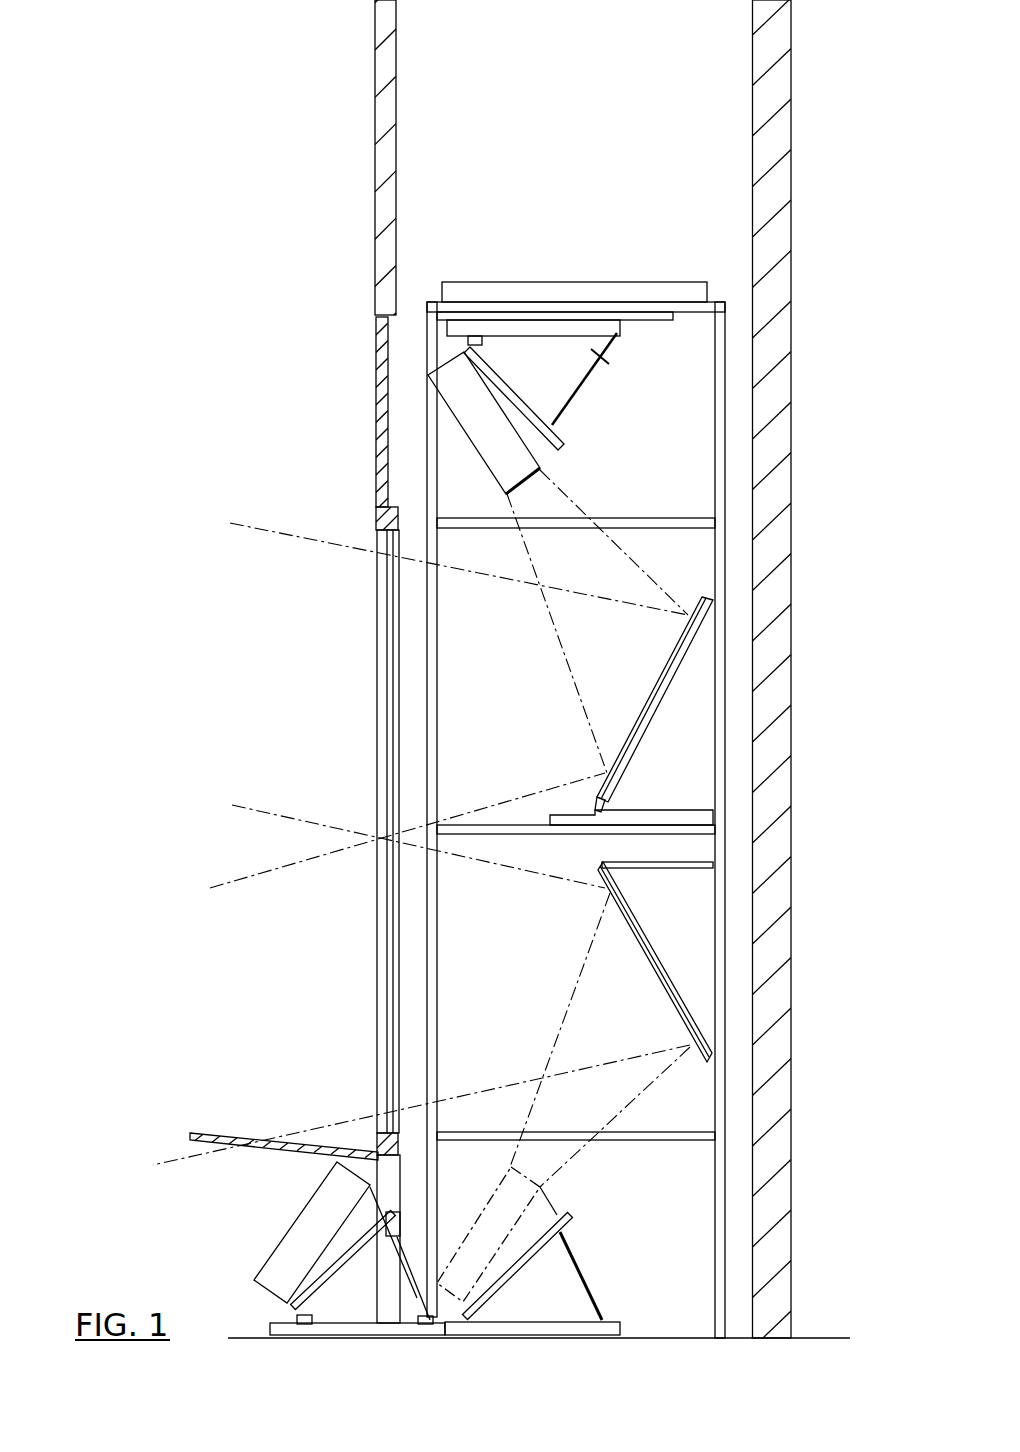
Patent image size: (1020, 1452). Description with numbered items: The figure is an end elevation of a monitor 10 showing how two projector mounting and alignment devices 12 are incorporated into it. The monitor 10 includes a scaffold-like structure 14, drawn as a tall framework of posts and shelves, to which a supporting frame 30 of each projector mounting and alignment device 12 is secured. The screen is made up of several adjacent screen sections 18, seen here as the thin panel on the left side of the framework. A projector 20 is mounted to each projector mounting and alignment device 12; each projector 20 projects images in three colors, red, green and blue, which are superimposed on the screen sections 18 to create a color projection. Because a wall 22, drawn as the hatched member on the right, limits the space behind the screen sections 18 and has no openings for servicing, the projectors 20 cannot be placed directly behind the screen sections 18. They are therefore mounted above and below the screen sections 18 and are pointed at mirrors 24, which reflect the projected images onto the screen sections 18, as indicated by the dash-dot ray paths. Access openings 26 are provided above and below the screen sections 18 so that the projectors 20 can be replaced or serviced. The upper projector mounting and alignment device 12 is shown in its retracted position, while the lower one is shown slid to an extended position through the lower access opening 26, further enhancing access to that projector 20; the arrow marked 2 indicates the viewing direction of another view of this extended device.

The monitor 10 is at (140, 642).
The projector mounting and alignment device 12 is at (605, 391).
The scaffold-like structure 14 is at (432, 482).
The screen section 18 is at (378, 663).
The projector 20 is at (472, 408).
The wall 22 is at (762, 207).
The mirror 24 is at (663, 677).
The access opening 26 is at (382, 340).
The supporting frame 30 is at (648, 315).
The section line / view direction for FIG. 2 is at (200, 1216).